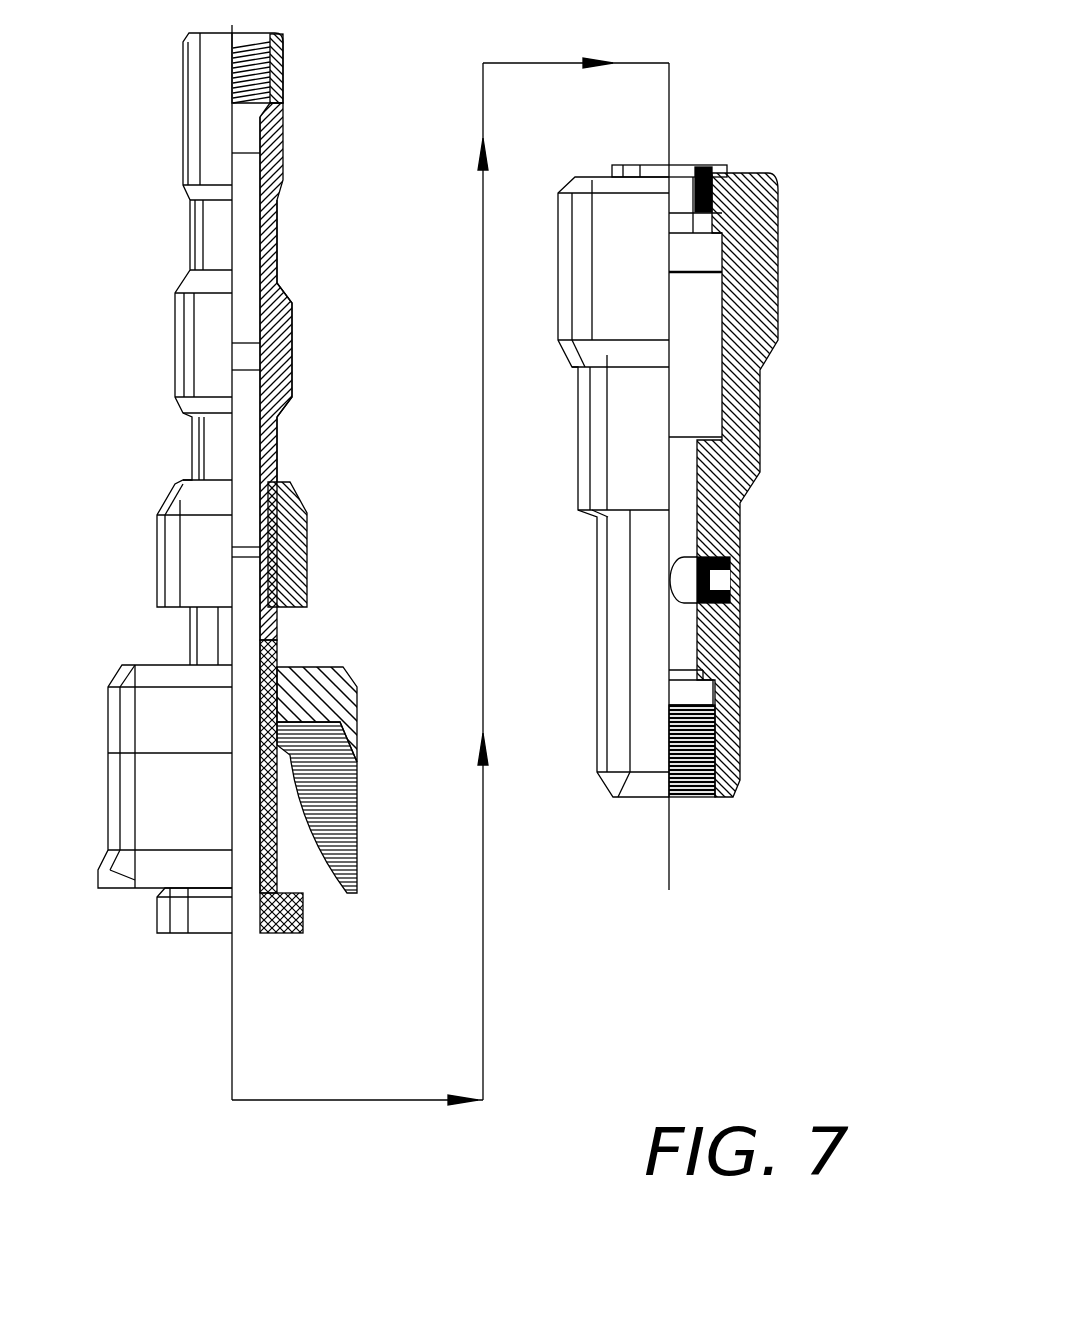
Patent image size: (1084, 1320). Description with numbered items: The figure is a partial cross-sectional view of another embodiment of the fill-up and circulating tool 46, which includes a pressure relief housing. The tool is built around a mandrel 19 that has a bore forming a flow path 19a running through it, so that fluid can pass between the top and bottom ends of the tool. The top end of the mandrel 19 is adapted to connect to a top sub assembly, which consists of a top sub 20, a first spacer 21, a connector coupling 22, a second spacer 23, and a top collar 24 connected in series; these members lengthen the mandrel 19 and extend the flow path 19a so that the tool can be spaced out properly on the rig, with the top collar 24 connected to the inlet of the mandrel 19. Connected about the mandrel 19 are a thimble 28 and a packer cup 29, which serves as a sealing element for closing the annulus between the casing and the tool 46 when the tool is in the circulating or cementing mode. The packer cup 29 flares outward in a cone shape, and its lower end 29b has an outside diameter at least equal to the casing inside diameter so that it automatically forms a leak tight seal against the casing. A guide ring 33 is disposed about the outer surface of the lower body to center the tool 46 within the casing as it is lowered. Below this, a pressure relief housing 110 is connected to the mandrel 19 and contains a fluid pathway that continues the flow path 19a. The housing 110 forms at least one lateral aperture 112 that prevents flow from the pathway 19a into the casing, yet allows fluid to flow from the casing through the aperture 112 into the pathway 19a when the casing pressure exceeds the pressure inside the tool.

The mandrel 19 is at (278, 641).
The flow path 19a is at (250, 631).
The top sub 20 is at (285, 100).
The first spacer 21 is at (278, 232).
The connector coupling 22 is at (292, 328).
The second spacer 23 is at (278, 456).
The top collar 24 is at (308, 541).
The thimble 28 is at (358, 700).
The packer cup 29 is at (357, 796).
The lower end of packer cup 29b is at (303, 925).
The fill-up and circulating tool 46 is at (340, 193).
The guide ring 33 is at (780, 296).
The pressure relief housing 110 is at (618, 655).
The lateral aperture 112 is at (757, 576).